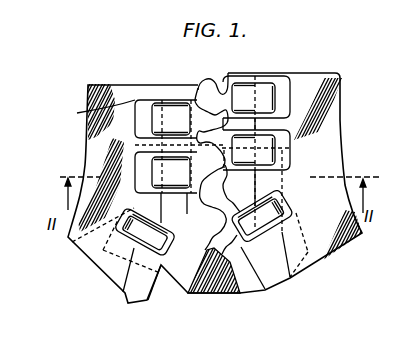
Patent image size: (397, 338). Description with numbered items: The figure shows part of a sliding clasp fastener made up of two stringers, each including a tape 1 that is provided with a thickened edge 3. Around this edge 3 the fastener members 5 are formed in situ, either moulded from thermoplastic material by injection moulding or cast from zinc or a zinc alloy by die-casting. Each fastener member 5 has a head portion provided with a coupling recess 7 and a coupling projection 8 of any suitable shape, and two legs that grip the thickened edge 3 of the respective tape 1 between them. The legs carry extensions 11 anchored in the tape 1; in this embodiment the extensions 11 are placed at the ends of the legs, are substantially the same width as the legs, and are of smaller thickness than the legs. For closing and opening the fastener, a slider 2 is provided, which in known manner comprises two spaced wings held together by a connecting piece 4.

The tape 1 is at (130, 97).
The slider 2 is at (72, 242).
The thickened edge 3 is at (141, 283).
The connecting piece 4 is at (215, 286).
The fastener member 5 is at (181, 103).
The coupling recess 7 is at (213, 84).
The coupling projection 8 is at (229, 145).
The extension 11 is at (147, 100).